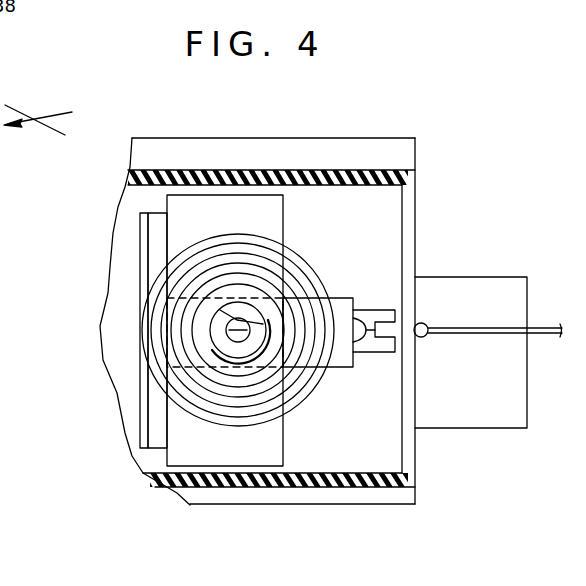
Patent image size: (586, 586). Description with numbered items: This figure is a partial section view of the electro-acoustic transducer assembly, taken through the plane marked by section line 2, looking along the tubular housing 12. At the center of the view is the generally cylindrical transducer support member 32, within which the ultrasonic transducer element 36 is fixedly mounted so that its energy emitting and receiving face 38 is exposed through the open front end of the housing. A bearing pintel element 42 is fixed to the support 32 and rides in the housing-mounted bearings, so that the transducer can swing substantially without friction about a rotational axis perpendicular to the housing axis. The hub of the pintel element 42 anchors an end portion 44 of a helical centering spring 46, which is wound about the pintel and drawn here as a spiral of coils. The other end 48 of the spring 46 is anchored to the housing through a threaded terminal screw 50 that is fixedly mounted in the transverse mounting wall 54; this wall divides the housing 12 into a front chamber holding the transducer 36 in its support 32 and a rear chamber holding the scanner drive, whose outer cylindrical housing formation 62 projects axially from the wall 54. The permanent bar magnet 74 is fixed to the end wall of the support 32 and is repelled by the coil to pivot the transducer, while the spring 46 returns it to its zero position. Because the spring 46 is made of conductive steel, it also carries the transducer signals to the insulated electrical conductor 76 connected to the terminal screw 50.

The section line 2 is at (38, 132).
The tubular housing 12 is at (323, 169).
The transducer support member 32 is at (273, 218).
The ultrasonic transducer element 36 is at (160, 230).
The energy emitting and receiving face 38 is at (140, 258).
The bearing pintel element 42 is at (233, 353).
The end portion 44 is at (238, 318).
The helical centering spring 46 is at (137, 326).
The end 48 is at (360, 350).
The threaded terminal screw 50 is at (424, 325).
The transverse mounting wall 54 is at (411, 215).
The outer cylindrical housing formation 62 is at (478, 428).
The permanent bar magnet 74 is at (352, 300).
The insulated electrical conductor 76 is at (475, 335).